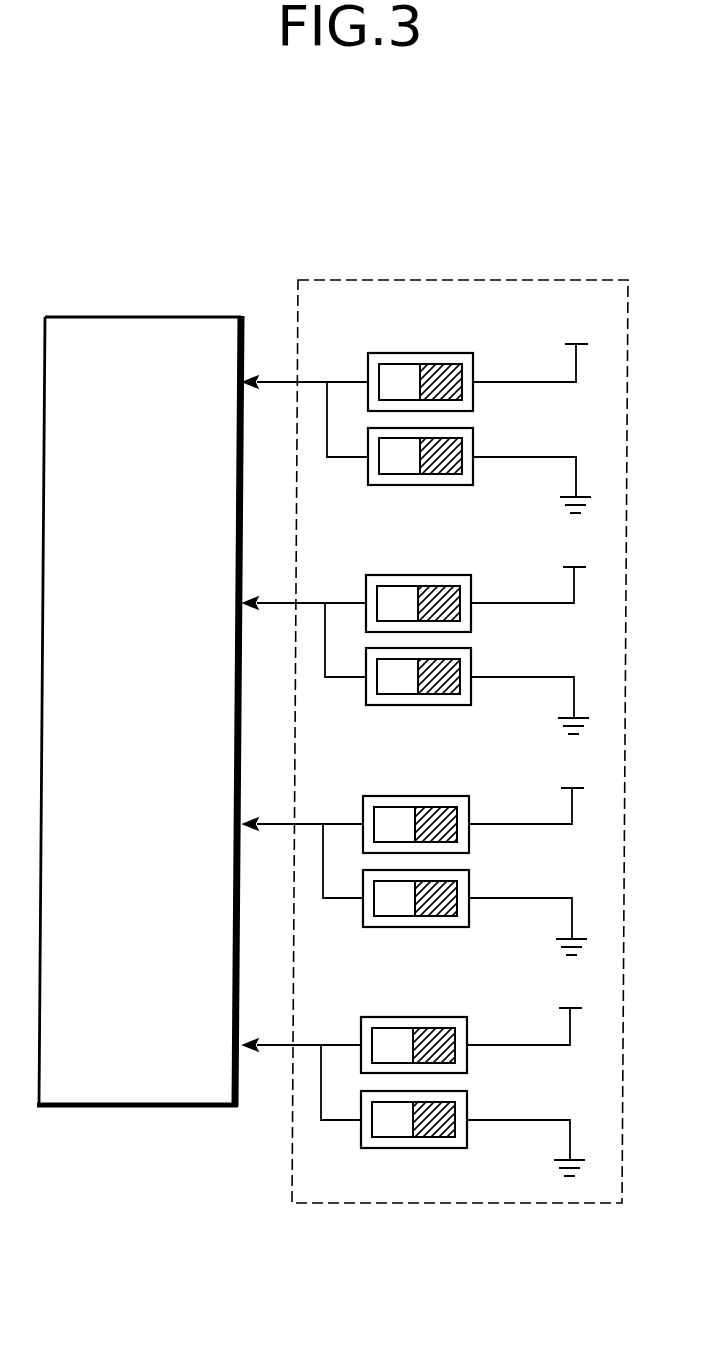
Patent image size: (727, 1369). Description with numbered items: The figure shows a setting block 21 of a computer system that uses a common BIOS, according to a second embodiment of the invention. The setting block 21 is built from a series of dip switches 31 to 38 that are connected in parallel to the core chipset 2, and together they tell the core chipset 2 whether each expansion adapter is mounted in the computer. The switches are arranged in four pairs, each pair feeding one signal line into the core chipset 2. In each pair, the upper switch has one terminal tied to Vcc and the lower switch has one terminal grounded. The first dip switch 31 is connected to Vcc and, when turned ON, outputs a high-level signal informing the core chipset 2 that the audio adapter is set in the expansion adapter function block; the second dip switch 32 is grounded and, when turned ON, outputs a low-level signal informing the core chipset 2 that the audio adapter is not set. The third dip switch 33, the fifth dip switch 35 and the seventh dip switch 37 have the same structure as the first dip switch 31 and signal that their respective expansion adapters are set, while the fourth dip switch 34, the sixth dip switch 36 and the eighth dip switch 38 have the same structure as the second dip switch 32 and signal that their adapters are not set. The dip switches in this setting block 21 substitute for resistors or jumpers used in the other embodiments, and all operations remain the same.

The core chipset 2 is at (133, 317).
The setting block 21 is at (454, 280).
The first dip switch 31 is at (405, 353).
The second dip switch 32 is at (475, 441).
The third dip switch 33 is at (403, 575).
The fourth dip switch 34 is at (473, 663).
The fifth dip switch 35 is at (400, 796).
The sixth dip switch 36 is at (471, 883).
The seventh dip switch 37 is at (395, 1017).
The eighth dip switch 38 is at (469, 1105).